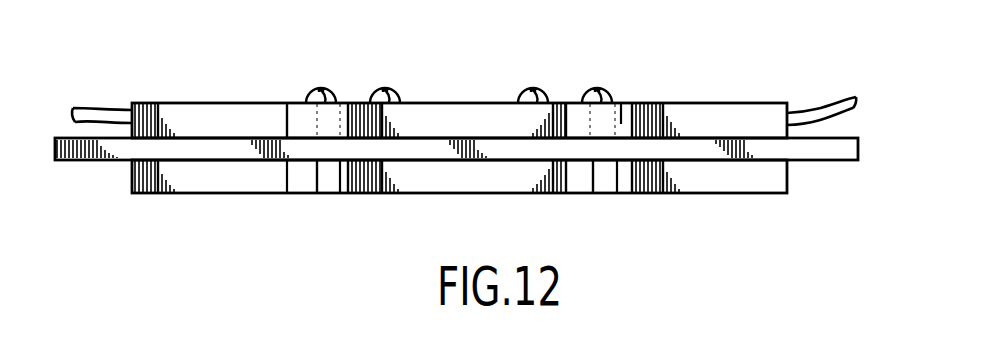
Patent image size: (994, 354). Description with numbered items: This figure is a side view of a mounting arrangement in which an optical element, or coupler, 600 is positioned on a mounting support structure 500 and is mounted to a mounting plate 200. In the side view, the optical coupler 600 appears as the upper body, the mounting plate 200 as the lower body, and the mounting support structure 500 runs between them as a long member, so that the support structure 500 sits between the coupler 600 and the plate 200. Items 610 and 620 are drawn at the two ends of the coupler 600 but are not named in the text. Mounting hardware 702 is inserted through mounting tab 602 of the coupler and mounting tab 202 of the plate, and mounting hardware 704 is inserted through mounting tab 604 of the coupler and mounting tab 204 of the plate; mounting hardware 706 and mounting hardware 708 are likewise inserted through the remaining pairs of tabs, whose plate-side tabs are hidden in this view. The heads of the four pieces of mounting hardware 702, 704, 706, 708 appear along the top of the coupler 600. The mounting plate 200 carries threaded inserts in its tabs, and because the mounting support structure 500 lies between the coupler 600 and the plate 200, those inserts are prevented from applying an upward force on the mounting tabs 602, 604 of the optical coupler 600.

The mounting plate 200 is at (730, 194).
The mounting tab 202 is at (605, 183).
The mounting tab 204 is at (308, 183).
The mounting support structure 500 is at (859, 150).
The optical coupler 600 is at (707, 105).
The mounting tab 602 is at (627, 107).
The mounting tab 604 is at (300, 112).
The lead wire 610 is at (110, 108).
The lead wire 620 is at (827, 108).
The mounting hardware 702 is at (608, 100).
The mounting hardware 704 is at (337, 100).
The mounting hardware 706 is at (397, 100).
The mounting hardware 708 is at (543, 100).